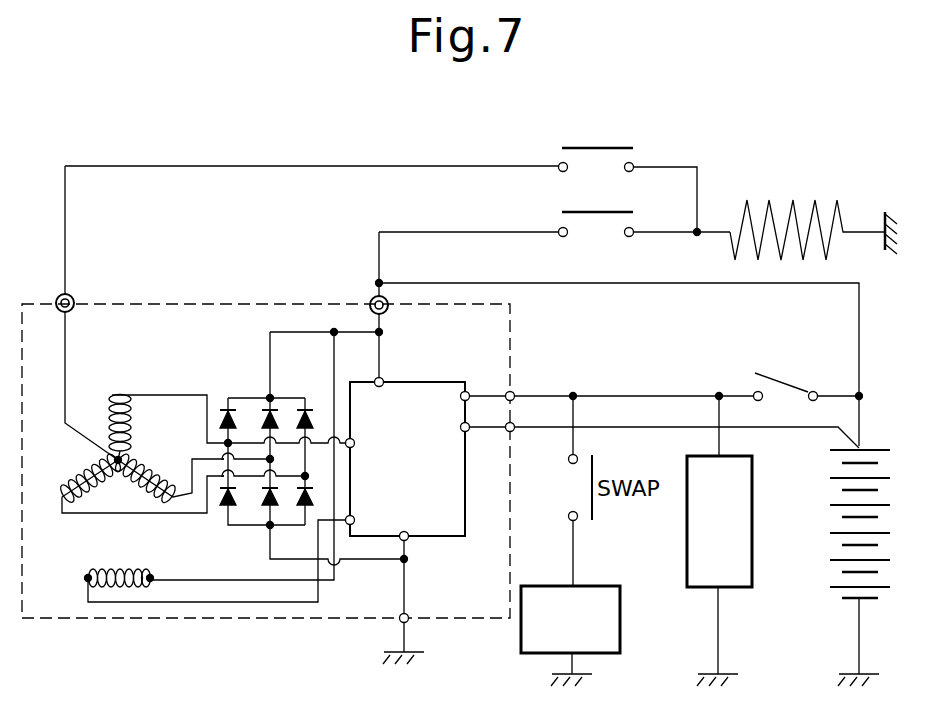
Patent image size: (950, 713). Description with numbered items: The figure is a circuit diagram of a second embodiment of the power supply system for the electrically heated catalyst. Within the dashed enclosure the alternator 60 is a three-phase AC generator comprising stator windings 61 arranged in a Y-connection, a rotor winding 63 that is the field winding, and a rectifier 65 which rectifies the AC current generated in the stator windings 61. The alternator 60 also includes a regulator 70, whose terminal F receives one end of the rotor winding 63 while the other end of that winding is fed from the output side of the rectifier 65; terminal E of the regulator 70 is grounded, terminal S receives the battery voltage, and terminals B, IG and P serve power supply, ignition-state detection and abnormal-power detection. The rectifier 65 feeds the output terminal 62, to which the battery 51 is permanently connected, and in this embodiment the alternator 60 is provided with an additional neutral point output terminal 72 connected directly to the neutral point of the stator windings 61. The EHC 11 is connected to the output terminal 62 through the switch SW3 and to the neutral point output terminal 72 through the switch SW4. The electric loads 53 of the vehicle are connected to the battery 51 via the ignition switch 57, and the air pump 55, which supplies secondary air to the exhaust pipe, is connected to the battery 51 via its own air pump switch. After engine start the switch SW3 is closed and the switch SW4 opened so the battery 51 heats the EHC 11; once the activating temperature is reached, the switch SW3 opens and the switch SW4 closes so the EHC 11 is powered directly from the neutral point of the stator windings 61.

The EHC 11 is at (782, 206).
The battery 51 is at (833, 566).
The electric loads 53 is at (754, 500).
The air pump 55 is at (622, 616).
The ignition switch 57 is at (778, 382).
The alternator 60 is at (196, 303).
The stator windings 61 is at (133, 382).
The output terminal 62 is at (370, 297).
The rotor winding 63 is at (152, 570).
The rectifier 65 is at (254, 387).
The regulator 70 is at (429, 379).
The neutral point output terminal 72 is at (56, 296).
The switch SW3 is at (594, 220).
The switch SW4 is at (588, 146).